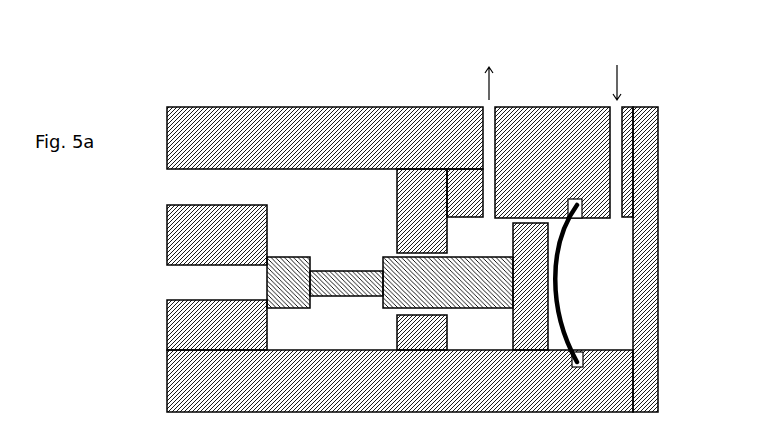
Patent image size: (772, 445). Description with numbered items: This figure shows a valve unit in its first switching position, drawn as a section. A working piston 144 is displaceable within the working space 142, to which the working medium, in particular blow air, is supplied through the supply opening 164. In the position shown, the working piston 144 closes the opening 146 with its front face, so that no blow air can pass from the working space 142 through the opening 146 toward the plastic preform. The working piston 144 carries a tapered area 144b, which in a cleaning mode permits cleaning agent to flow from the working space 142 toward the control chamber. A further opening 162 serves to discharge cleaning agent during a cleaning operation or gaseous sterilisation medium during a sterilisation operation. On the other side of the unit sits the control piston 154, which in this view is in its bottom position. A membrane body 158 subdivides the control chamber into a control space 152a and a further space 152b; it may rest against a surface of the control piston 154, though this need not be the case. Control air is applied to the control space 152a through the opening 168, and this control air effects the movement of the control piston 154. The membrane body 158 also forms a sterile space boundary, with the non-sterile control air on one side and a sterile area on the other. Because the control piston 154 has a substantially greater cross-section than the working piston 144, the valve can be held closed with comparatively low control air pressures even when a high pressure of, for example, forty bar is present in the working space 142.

The working space 142 is at (277, 187).
The supply opening 164 is at (178, 175).
The opening 146 is at (172, 272).
The working piston 144 is at (430, 265).
The tapered area 144b is at (345, 272).
The opening 162 is at (481, 143).
The control piston 154 is at (521, 222).
The further space 152b is at (503, 286).
The membrane body 158 is at (580, 200).
The control space 152a is at (605, 211).
The opening 168 is at (612, 162).